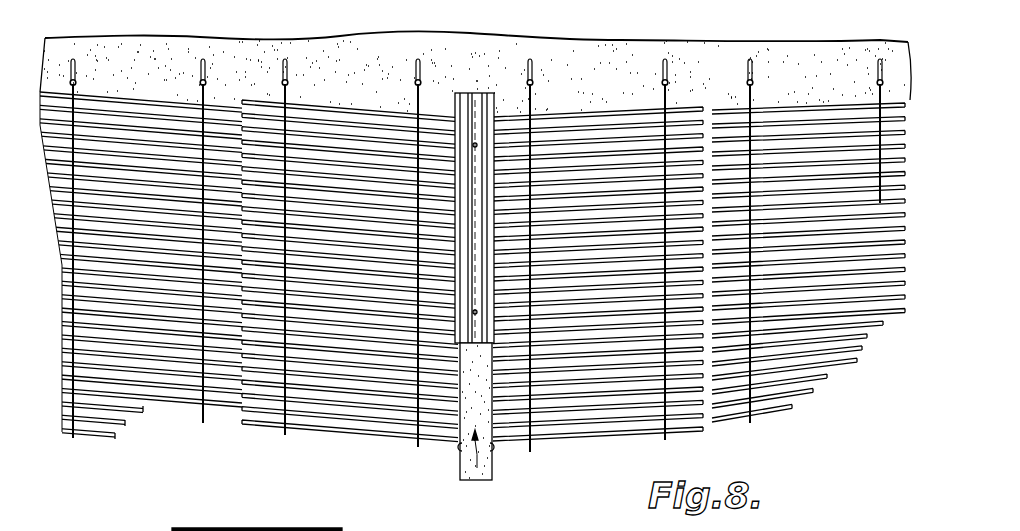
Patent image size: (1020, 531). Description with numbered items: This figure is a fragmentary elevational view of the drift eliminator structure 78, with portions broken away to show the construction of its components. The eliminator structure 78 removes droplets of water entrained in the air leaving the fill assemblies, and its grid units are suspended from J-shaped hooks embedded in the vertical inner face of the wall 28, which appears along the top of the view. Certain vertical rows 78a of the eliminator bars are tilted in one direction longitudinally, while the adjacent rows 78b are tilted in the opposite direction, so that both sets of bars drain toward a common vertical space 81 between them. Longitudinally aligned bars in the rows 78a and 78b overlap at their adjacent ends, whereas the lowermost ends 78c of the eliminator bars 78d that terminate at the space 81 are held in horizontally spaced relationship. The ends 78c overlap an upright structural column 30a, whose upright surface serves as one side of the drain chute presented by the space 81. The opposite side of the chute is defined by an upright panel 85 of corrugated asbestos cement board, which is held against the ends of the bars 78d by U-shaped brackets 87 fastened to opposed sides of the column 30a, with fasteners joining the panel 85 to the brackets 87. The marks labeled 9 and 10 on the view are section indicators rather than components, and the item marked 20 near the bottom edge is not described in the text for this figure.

The wall 28 is at (595, 58).
The drift eliminator structure 78 is at (465, 282).
The vertical rows of eliminator bars 78a is at (263, 430).
The adjacent vertical rows of eliminator bars 78b is at (640, 436).
The lowermost ends of eliminator bars 78c is at (462, 449).
The eliminator bars terminating at the space 78d is at (365, 433).
The common vertical space 81 is at (487, 482).
The upright panel 85 is at (474, 97).
The U-shaped brackets 87 is at (455, 306).
The section line 9- 9 is at (519, 194).
The section line 10- 10 is at (508, 352).
The upright structural column 30a is at (461, 485).
The housing 20 is at (233, 529).